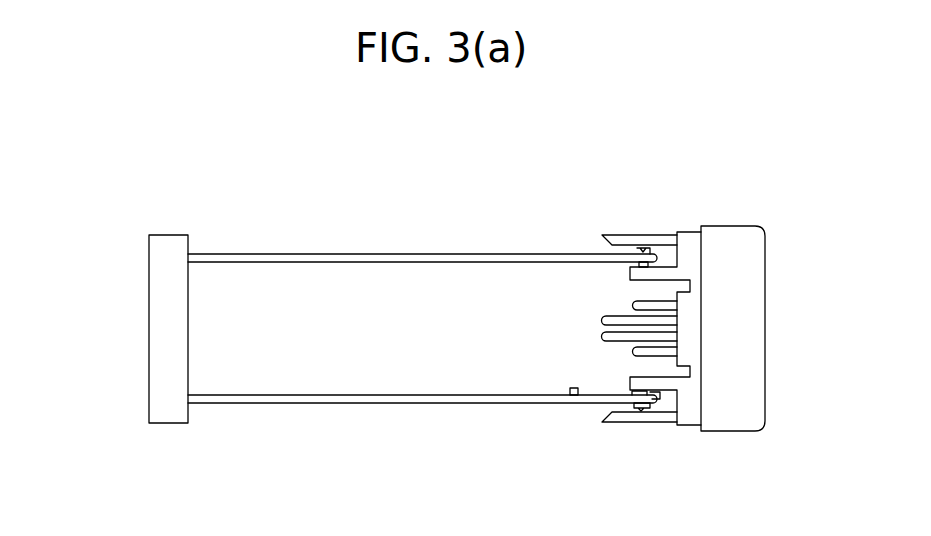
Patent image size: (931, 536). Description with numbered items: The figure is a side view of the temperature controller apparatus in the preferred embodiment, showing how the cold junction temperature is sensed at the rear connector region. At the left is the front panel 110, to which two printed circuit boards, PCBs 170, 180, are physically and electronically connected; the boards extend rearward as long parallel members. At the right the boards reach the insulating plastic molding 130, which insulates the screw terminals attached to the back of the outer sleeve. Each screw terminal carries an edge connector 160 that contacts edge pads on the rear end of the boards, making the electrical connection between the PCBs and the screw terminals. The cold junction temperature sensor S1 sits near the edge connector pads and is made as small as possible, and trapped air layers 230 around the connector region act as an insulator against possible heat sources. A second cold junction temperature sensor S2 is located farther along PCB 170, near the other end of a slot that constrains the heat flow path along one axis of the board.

The front panel 110 is at (150, 278).
The insulating plastic molding 130 is at (765, 378).
The PCB 170 is at (337, 254).
The PCB 180 is at (243, 395).
The edge connector 160 is at (639, 410).
The trapped air layers 230 is at (664, 392).
The cold junction temperature sensor S1 is at (632, 392).
The cold junction temperature sensor S2 is at (568, 391).